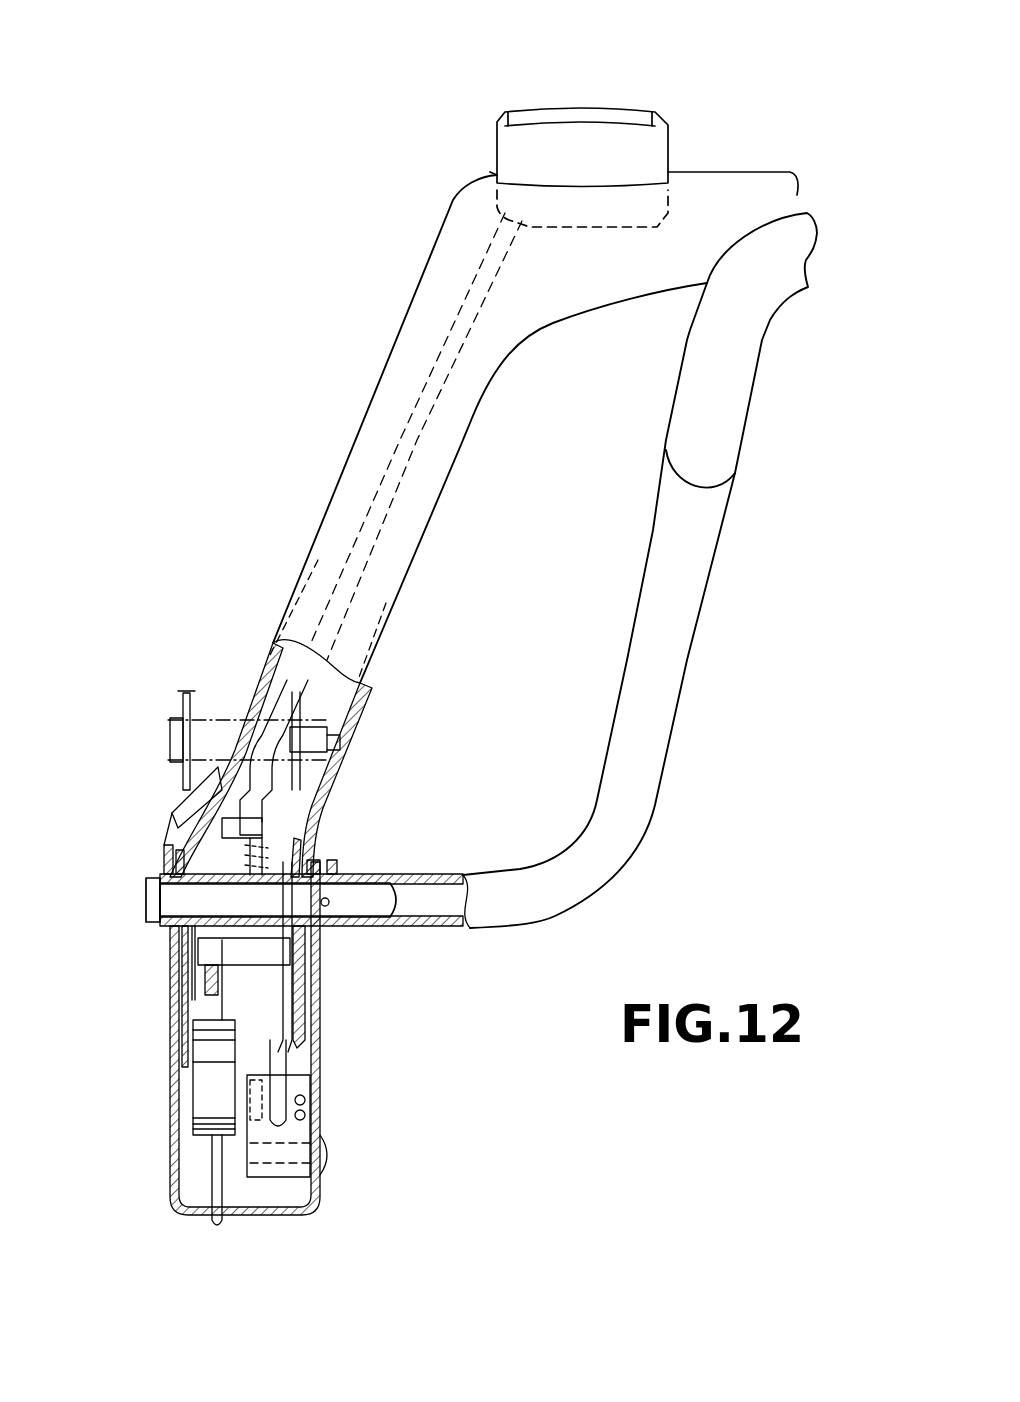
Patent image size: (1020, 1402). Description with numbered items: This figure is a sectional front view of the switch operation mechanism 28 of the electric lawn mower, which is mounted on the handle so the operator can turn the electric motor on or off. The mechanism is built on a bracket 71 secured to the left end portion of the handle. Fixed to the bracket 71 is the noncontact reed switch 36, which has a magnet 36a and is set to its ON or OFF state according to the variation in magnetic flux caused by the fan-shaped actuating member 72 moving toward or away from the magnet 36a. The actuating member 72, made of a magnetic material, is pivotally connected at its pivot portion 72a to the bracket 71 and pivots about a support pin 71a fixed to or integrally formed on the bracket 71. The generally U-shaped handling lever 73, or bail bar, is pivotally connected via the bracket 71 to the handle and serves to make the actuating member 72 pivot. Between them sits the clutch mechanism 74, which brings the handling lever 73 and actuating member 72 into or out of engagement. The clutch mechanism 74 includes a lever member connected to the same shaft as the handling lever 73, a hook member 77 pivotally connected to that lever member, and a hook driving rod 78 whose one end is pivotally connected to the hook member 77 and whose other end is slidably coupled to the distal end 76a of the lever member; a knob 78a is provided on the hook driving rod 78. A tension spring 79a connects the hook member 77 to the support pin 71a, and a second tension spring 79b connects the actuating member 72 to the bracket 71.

The switch operation mechanism 28 is at (308, 142).
The clutch mechanism 74 is at (268, 535).
The hook driving rod 78 is at (398, 446).
The knob 78a is at (568, 112).
The distal end 76a is at (710, 168).
The handling lever 73 is at (703, 583).
The hook member 77 is at (240, 697).
The tension spring 79a is at (258, 832).
The pivot portion 72a is at (287, 862).
The support pin 71a is at (190, 950).
The bracket 71 is at (267, 1220).
The actuating member 72 is at (313, 1043).
The noncontact reed switch 36 is at (300, 1138).
The magnet 36a is at (260, 1075).
The tension spring 79b is at (203, 1167).